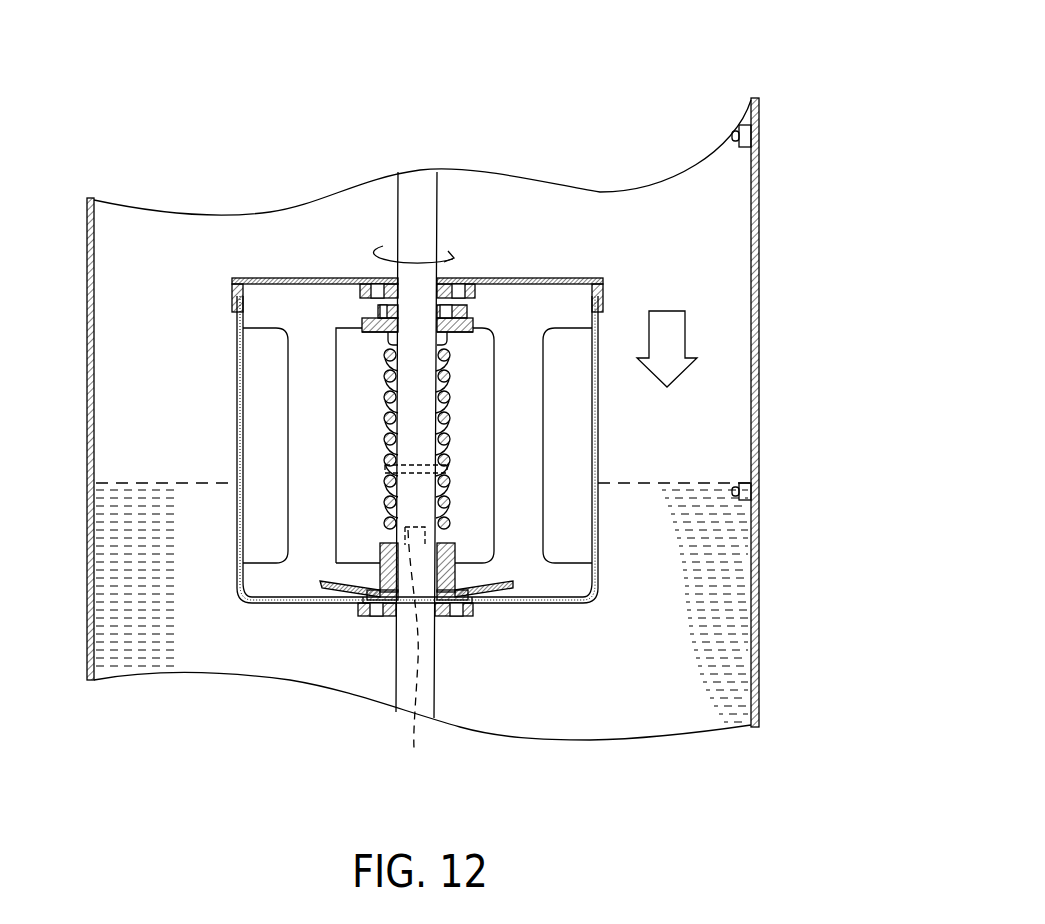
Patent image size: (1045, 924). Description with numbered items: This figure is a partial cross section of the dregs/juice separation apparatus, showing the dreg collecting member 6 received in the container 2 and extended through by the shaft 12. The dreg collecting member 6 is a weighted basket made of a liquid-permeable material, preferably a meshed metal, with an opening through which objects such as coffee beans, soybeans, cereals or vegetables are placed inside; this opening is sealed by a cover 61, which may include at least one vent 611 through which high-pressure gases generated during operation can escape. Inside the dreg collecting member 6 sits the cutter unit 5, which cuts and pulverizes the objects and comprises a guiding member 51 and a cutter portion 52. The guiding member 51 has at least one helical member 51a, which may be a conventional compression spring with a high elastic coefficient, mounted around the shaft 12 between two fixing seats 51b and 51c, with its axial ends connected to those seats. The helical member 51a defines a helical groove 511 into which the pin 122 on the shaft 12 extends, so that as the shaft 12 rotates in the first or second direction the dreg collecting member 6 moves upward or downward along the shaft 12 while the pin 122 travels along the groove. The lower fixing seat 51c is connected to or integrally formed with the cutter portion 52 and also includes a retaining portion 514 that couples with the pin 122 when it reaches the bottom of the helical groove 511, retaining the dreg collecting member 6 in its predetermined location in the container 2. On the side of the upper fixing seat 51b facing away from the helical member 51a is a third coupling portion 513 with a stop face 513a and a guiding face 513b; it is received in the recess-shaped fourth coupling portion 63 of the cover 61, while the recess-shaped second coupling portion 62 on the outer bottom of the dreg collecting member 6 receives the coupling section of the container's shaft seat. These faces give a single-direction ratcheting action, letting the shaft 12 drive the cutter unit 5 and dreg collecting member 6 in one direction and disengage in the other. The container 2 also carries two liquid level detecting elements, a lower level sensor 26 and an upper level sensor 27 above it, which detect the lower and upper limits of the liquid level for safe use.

The container 2 is at (760, 213).
The liquid level detecting element 26 is at (752, 478).
The liquid level detecting element 27 is at (740, 134).
The shaft 12 is at (408, 190).
The pin 122 is at (448, 472).
The retaining portion 514 is at (418, 648).
The dreg collecting member 6 is at (246, 597).
The cover 61 is at (232, 298).
The vent 611 is at (298, 282).
The fourth coupling portion 63 is at (372, 290).
The second coupling portion 62 is at (372, 612).
The cutter unit 5 is at (468, 393).
The guiding member 51 is at (160, 331).
The helical member 51a is at (386, 420).
The fixing seat 51b is at (386, 334).
The fixing seat 51c is at (380, 548).
The helical groove 511 is at (470, 457).
The third coupling portion 513 is at (472, 318).
The stop face 513a is at (478, 330).
The guiding face 513b is at (458, 305).
The cutter portion 52 is at (498, 590).